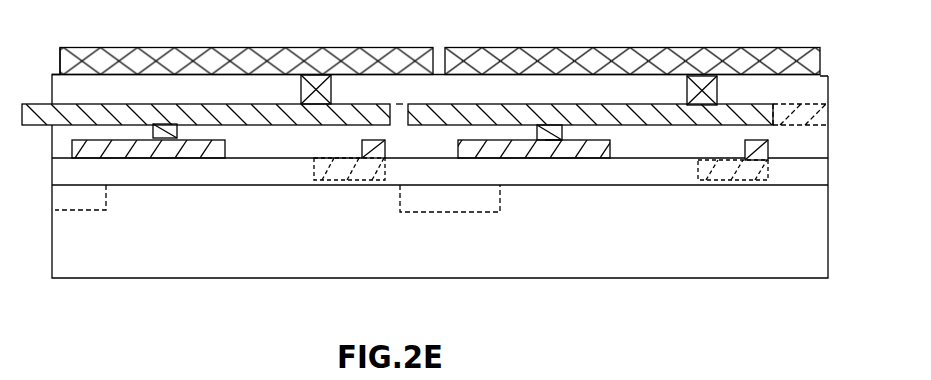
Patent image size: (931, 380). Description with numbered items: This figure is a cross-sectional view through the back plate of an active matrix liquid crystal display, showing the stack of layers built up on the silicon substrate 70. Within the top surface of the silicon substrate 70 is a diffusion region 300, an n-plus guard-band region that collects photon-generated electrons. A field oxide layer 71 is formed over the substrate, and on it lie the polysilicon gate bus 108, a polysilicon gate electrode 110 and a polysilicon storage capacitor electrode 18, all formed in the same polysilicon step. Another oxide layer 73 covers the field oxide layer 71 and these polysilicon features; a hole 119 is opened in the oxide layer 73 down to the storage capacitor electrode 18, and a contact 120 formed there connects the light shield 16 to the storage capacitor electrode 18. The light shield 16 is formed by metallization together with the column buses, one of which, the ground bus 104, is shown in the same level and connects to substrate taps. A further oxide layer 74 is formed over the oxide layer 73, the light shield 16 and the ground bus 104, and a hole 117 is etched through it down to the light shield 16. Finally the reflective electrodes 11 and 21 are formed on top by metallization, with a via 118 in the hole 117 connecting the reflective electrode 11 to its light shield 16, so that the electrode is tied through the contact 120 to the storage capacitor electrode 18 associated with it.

The reflective electrode 11 is at (520, 62).
The light shield 16 is at (485, 118).
The polysilicon storage capacitor electrode 18 is at (495, 150).
The reflective electrode 21 is at (132, 58).
The silicon substrate 70 is at (527, 265).
The field oxide layer 71 is at (536, 178).
The oxide layer 73 is at (655, 148).
The oxide layer 74 is at (624, 88).
The ground bus 104 is at (812, 112).
The polysilicon gate bus 108 is at (768, 151).
The polysilicon gate electrode 110 is at (738, 180).
The hole 117 is at (716, 92).
The via 118 is at (690, 93).
The hole 119 is at (550, 137).
The contact 120 is at (553, 142).
The diffusion region 300 is at (460, 198).